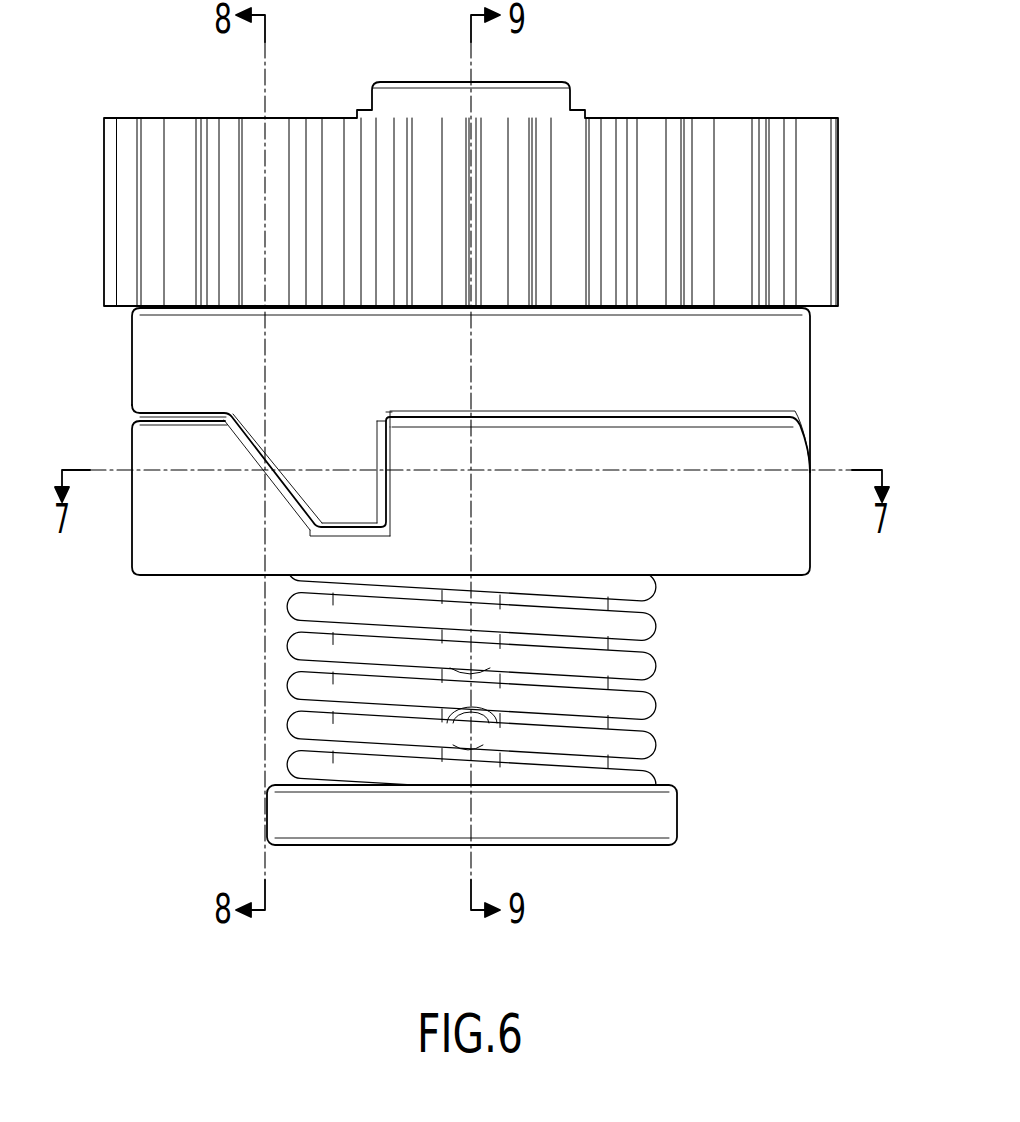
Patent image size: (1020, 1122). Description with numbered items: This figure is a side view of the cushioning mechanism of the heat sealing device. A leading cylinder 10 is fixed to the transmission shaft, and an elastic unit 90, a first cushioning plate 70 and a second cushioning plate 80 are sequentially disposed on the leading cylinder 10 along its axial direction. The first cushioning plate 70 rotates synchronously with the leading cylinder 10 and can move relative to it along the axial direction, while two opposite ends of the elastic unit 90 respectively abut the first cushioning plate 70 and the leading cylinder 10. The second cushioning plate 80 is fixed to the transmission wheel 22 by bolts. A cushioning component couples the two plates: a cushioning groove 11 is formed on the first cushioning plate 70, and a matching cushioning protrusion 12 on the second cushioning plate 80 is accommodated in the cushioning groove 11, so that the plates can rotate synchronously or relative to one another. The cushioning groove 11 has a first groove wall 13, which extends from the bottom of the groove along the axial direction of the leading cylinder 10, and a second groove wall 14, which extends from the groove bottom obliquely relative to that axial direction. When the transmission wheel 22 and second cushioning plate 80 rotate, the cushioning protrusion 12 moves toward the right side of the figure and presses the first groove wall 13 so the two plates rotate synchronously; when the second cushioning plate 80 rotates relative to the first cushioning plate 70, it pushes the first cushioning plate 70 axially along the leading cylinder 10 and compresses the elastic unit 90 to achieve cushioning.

The leading cylinder 10 is at (657, 820).
The cushioning groove 11 is at (342, 527).
The cushioning protrusion 12 is at (355, 485).
The first groove wall 13 is at (378, 452).
The second groove wall 14 is at (250, 440).
The transmission wheel 22 is at (705, 153).
The first cushioning plate 70 is at (130, 558).
The second cushioning plate 80 is at (130, 373).
The elastic unit 90 is at (643, 703).